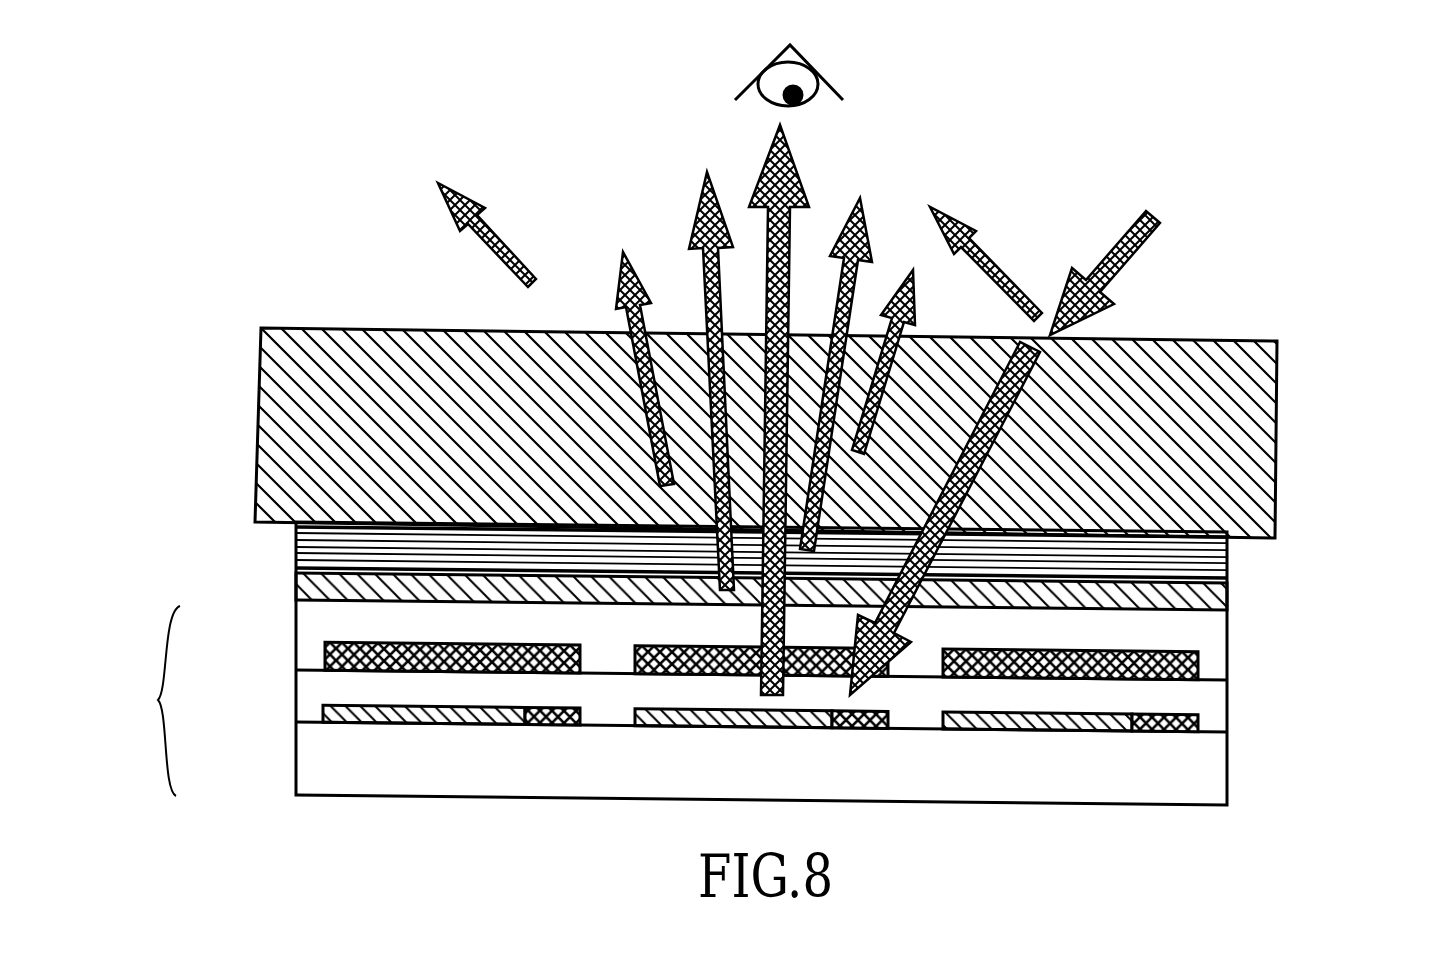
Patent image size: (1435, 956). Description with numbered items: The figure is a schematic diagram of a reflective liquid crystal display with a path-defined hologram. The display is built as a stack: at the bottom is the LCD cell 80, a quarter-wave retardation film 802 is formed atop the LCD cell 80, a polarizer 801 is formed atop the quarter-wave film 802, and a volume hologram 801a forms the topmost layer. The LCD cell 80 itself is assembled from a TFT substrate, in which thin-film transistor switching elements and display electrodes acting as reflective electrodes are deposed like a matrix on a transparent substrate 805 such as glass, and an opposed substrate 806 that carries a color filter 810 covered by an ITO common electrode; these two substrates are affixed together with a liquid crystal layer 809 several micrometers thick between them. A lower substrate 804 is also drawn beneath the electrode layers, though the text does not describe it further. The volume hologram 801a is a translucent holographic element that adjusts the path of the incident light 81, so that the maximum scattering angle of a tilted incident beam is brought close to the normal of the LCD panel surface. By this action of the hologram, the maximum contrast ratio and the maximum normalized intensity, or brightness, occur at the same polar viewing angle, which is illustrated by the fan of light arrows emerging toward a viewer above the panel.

The LCD cell 80 is at (145, 701).
The incident light 81 is at (1118, 249).
The polarizer 801 is at (1230, 557).
The volume hologram 801a is at (1277, 447).
The quarter-wave retardation film 802 is at (1230, 600).
The lower substrate 804 is at (1125, 737).
The transparent substrate 805 is at (313, 762).
The opposed substrate 806 is at (313, 622).
The liquid crystal layer 809 is at (1205, 705).
The color filter 810 is at (1200, 653).